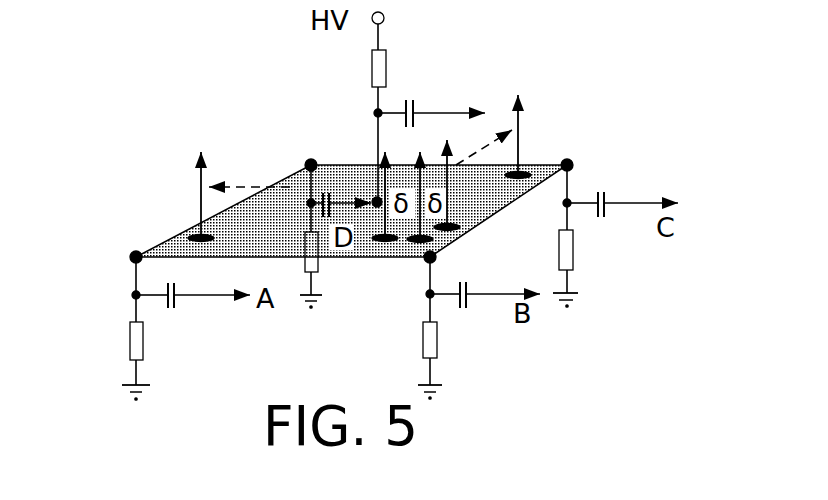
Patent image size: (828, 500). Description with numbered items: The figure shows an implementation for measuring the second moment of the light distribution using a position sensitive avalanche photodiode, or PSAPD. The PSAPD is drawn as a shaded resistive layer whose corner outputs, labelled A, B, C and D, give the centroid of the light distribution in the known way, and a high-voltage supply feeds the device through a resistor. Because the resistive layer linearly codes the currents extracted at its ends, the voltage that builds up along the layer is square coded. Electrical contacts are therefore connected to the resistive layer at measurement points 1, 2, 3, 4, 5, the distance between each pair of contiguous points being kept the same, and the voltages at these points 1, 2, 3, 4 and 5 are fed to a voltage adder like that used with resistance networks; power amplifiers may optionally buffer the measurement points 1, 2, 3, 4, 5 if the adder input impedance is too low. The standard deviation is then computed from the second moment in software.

The voltage measurement point 1 is at (201, 182).
The voltage measurement point 2 is at (385, 182).
The voltage measurement point 3 is at (420, 183).
The voltage measurement point 4 is at (447, 171).
The voltage measurement point 5 is at (518, 119).